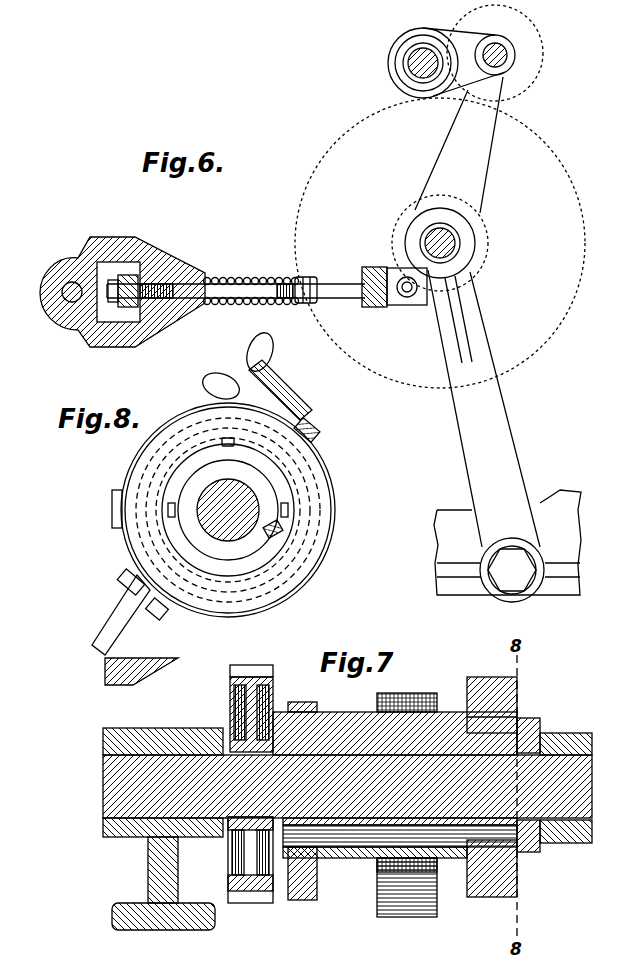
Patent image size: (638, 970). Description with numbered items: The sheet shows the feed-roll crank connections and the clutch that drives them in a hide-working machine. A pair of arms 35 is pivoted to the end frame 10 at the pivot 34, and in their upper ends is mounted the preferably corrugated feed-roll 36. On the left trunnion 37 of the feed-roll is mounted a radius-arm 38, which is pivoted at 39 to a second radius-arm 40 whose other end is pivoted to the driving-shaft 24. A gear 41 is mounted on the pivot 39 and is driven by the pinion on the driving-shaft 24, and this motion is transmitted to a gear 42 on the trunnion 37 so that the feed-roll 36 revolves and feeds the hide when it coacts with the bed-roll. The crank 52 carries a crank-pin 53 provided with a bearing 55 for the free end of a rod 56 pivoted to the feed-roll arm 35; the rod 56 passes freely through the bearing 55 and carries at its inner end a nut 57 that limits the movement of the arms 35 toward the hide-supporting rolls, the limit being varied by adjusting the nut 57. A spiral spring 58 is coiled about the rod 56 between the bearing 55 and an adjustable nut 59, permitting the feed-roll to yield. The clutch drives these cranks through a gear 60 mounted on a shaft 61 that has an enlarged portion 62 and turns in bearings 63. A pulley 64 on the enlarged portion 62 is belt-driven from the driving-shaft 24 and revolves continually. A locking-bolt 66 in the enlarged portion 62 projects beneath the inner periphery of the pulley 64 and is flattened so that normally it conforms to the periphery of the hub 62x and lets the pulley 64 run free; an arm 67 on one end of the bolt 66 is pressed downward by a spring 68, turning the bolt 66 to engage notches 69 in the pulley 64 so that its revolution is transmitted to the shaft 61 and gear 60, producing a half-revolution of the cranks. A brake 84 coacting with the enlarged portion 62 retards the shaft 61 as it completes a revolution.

In FIG. 6, the end frame 10 is at (567, 553).
In FIG. 6, the driving-shaft 24 is at (412, 60).
In FIG. 6, the pivot 34 is at (524, 580).
In FIG. 6, the arm 35 is at (498, 416).
In FIG. 6, the feed-roll 36 is at (487, 241).
In FIG. 6, the left trunnion 37 is at (455, 252).
In FIG. 6, the radius-arm 38 is at (488, 170).
In FIG. 6, the pivot 39 is at (505, 55).
In FIG. 6, the second radius-arm 40 is at (472, 40).
In FIG. 6, the gear 41 is at (540, 60).
In FIG. 6, the gear 42 is at (555, 154).
In FIG. 6, the crank 52 is at (102, 318).
In FIG. 6, the crank-pin 53 is at (62, 293).
In FIG. 6, the bearing 55 is at (162, 322).
In FIG. 6, the rod 56 is at (249, 280).
In FIG. 6, the nut 57 is at (130, 282).
In FIG. 6, the spiral spring 58 is at (218, 278).
In FIG. 6, the nut 59 is at (312, 278).
In FIG. 7, the gear 60 is at (255, 670).
In FIG. 8, the shaft 61 is at (262, 506).
In FIG. 7, the shaft 61 is at (112, 773).
In FIG. 8, the enlarged portion 62 is at (282, 567).
In FIG. 7, the enlarged portion 62 is at (345, 715).
In FIG. 8, the hub 62x is at (224, 570).
In FIG. 7, the hub 62x is at (530, 725).
In FIG. 8, the bearing 63 is at (106, 668).
In FIG. 7, the bearing 63 is at (150, 733).
In FIG. 8, the pulley 64 is at (331, 518).
In FIG. 7, the pulley 64 is at (478, 680).
In FIG. 8, the locking-bolt 66 is at (172, 527).
In FIG. 7, the locking-bolt 66 is at (350, 847).
In FIG. 8, the arm 67 is at (165, 515).
In FIG. 7, the arm 67 is at (302, 893).
In FIG. 8, the spring 68 is at (178, 432).
In FIG. 7, the spring 68 is at (303, 699).
In FIG. 8, the notch 69 is at (288, 506).
In FIG. 8, the brake 84 is at (320, 434).
In FIG. 7, the brake 84 is at (414, 688).